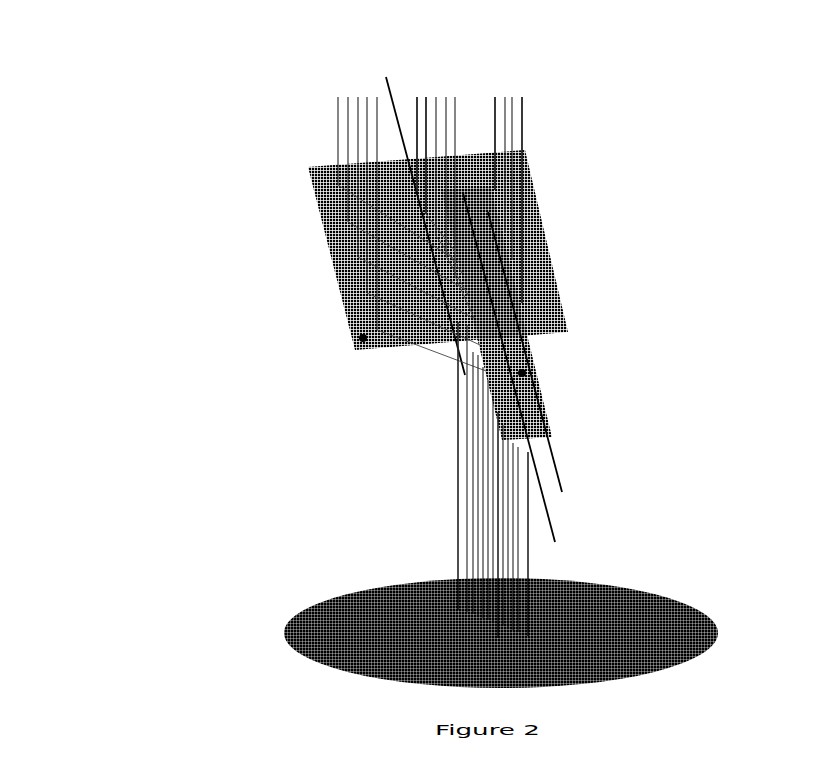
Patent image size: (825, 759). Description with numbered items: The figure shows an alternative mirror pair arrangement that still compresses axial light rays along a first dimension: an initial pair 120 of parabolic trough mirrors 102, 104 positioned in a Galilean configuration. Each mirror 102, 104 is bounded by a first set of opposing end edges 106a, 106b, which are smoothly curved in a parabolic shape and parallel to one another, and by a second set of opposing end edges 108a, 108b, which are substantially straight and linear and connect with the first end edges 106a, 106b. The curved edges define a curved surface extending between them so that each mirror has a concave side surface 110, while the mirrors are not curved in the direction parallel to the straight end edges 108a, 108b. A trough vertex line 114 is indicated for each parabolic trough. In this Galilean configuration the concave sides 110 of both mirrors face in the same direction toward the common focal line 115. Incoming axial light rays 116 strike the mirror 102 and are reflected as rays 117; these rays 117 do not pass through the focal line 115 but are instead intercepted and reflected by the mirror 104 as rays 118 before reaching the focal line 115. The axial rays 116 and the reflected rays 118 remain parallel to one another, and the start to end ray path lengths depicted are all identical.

The initial pair of parabolic trough mirrors 120 is at (256, 49).
The mirror 102 is at (548, 224).
The mirror 104 is at (547, 383).
The end edge 106a is at (322, 160).
The end edge 106b is at (373, 355).
The end edge 108a is at (318, 227).
The end edge 108b is at (552, 417).
The concave side surface 110 is at (363, 336).
The trough vertex line 114 is at (398, 78).
The common focal line 115 is at (564, 477).
The axial light rays 116 is at (336, 132).
The rays 117 is at (443, 358).
The reflected rays 118 is at (462, 512).